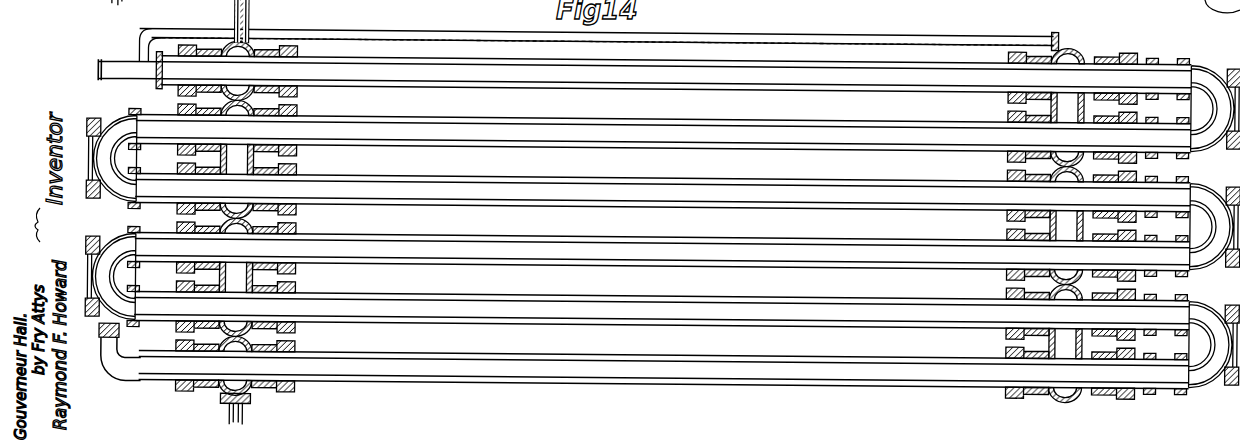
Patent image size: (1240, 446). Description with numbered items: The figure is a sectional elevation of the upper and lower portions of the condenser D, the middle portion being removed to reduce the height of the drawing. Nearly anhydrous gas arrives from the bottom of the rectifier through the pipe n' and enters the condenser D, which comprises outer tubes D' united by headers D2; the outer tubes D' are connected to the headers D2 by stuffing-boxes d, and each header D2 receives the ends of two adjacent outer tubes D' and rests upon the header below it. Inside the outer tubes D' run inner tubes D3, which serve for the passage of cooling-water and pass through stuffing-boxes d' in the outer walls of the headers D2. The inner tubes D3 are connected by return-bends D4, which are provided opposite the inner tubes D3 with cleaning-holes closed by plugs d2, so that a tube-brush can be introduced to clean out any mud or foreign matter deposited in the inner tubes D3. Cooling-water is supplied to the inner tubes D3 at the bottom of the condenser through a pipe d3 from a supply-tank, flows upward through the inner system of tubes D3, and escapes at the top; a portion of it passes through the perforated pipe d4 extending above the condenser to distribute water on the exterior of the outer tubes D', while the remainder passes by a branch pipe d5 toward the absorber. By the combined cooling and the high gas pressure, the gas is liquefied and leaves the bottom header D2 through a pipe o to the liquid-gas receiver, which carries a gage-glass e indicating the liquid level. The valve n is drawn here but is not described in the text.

The condenser D is at (743, 13).
The outer tubes D' is at (663, 215).
The headers D2 is at (651, 222).
The inner tubes D3 is at (663, 226).
The return-bends D4 is at (662, 222).
The stuffing-boxes d is at (651, 222).
The stuffing-boxes d' is at (656, 227).
The plugs d2 is at (660, 222).
The pipe d3 is at (122, 350).
The pipe d4 is at (598, 41).
The branch pipe d5 is at (130, 62).
The gage-glass e is at (121, 6).
The valve stem n is at (253, 21).
The pipe n' is at (246, 43).
The pipe o is at (239, 402).